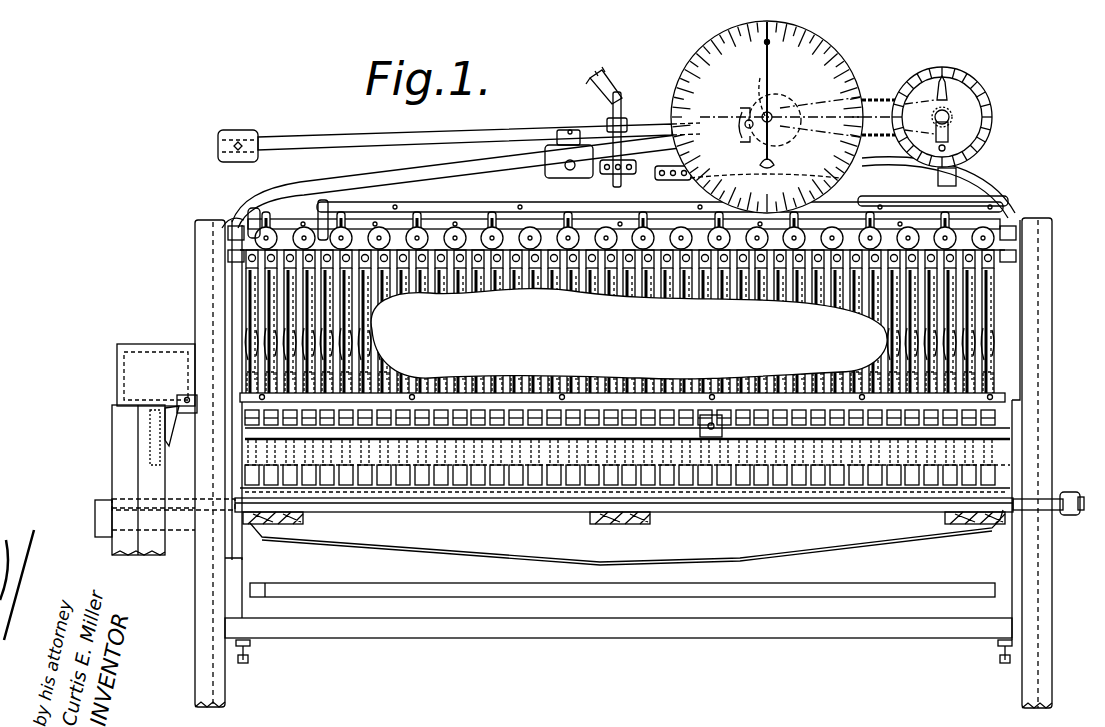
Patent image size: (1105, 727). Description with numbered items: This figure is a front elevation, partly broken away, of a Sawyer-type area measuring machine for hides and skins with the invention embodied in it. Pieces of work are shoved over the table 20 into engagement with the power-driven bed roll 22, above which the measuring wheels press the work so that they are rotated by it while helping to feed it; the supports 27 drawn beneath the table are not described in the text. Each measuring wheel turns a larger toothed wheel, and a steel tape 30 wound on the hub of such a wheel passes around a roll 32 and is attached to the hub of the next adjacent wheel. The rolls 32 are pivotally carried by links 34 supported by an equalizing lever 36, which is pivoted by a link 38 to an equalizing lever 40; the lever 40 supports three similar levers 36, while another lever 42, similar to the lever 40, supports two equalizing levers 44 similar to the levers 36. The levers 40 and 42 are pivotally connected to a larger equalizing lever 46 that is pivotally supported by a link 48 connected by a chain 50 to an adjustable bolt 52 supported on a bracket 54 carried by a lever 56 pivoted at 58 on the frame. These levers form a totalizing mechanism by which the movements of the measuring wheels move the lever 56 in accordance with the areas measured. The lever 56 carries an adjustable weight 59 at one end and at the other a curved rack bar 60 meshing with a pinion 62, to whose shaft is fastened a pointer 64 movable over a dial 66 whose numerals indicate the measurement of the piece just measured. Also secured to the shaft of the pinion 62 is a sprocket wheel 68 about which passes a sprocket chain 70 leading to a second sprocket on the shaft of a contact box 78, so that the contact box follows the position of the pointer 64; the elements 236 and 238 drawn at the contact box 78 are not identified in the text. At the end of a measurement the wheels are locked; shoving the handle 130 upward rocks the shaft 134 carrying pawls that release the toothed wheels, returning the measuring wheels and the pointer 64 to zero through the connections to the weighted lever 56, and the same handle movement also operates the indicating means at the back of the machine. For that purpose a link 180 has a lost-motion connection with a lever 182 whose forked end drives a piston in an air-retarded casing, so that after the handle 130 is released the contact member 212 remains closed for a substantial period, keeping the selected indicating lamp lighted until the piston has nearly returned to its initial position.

The table 20 is at (740, 512).
The bed roll 22 is at (798, 548).
The supports 27 is at (518, 488).
The steel tape 30 is at (232, 250).
The roll 32 is at (236, 222).
The links 34 is at (258, 218).
The equalizing lever 36 is at (265, 222).
The link 38 is at (318, 210).
The equalizing lever 40 is at (408, 204).
The lever 42 is at (868, 190).
The equalizing levers 44 is at (968, 210).
The larger equalizing lever 46 is at (490, 185).
The link 48 is at (665, 182).
The chain 50 is at (622, 158).
The handle 52 is at (612, 96).
The bracket 54 is at (606, 104).
The lever 56 is at (510, 130).
The pivot 58 is at (565, 130).
The adjustable weight 59 is at (240, 132).
The curved rack bar 60 is at (778, 82).
The pinion 62 is at (764, 114).
The pointer 64 is at (775, 55).
The dial 66 is at (826, 46).
The sprocket wheel 68 is at (788, 120).
The sprocket chain 70 is at (876, 98).
The contact box 78 is at (1004, 131).
The handle 130 is at (715, 420).
The shaft 134 is at (180, 398).
The link 180 is at (152, 446).
The lever 182 is at (160, 474).
The contact member 212 is at (148, 412).
The pointer 236 is at (948, 90).
The pinion 238 is at (950, 106).